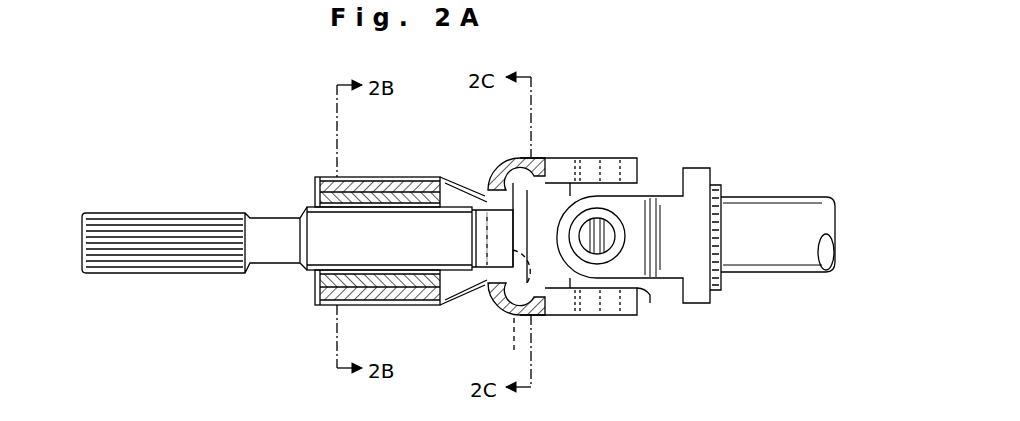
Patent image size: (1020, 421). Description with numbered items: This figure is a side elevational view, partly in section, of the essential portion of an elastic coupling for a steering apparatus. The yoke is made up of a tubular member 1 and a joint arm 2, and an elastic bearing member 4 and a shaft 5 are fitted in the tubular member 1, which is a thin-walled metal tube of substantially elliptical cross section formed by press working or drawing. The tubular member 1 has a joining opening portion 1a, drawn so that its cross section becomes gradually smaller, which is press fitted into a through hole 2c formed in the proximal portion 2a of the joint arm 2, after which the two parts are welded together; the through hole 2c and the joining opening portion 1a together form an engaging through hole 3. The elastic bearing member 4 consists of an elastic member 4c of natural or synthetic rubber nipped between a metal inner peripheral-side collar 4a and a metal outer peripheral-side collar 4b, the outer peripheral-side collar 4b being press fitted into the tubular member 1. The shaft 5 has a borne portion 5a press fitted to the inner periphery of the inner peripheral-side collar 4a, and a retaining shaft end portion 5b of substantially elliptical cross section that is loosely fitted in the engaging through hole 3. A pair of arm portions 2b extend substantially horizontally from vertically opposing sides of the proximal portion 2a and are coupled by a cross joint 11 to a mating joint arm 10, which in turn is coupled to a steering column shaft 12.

The tubular member 1 is at (365, 170).
The joining opening portion 1a is at (493, 175).
The joint arm 2 is at (599, 219).
The proximal portion 2a is at (495, 305).
The arm portions 2b is at (558, 155).
The through hole 2c is at (515, 348).
The engaging through hole 3 is at (524, 160).
The elastic bearing member 4 is at (344, 224).
The inner peripheral-side collar 4a is at (337, 208).
The outer peripheral-side collar 4b is at (323, 178).
The elastic member 4c is at (317, 197).
The shaft 5 is at (170, 210).
The borne portion 5a is at (445, 178).
The retaining shaft end portion 5b is at (497, 228).
The mating joint arm 10 is at (655, 180).
The cross joint 11 is at (640, 284).
The steering column shaft 12 is at (782, 197).